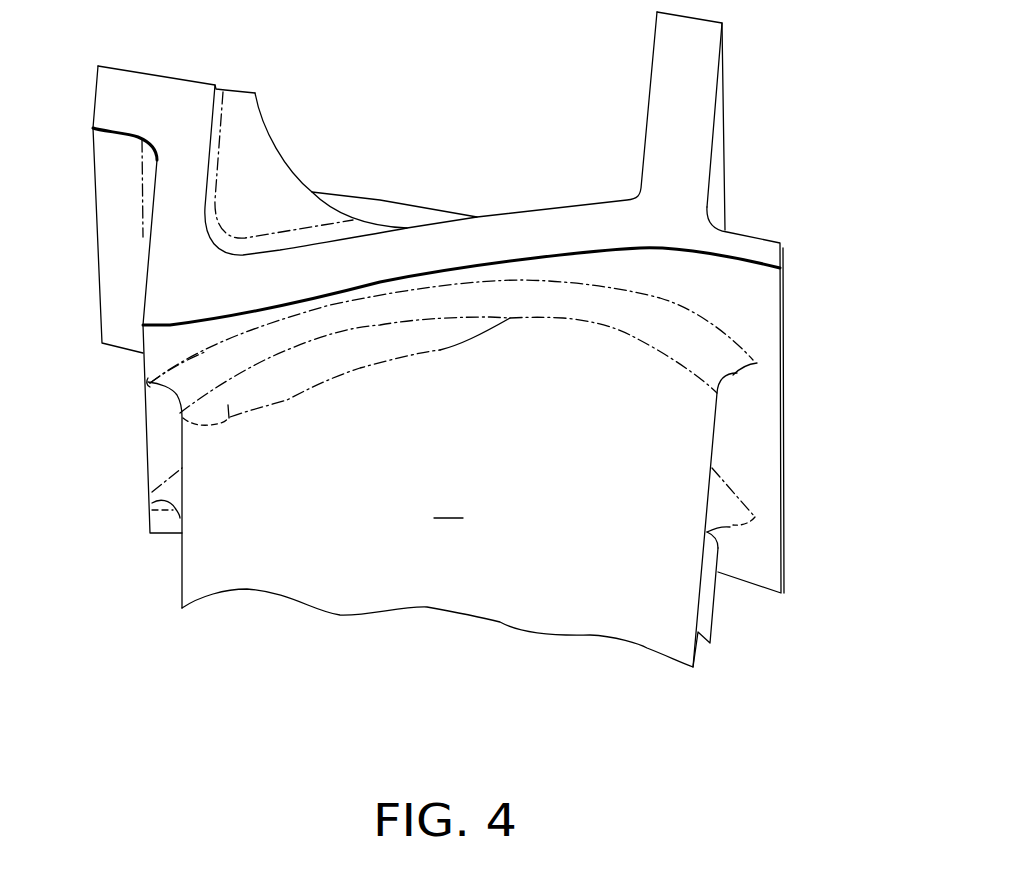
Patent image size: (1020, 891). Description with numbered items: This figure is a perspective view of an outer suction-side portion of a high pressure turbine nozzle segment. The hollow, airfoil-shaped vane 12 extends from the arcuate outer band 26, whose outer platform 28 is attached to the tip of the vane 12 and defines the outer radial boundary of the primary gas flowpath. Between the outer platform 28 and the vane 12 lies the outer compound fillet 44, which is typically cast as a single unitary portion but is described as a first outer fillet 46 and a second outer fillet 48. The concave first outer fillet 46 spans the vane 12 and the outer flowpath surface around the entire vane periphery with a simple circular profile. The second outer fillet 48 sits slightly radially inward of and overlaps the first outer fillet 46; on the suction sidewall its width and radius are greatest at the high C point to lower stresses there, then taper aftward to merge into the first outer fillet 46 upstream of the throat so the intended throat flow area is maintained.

The vane 12 is at (451, 520).
The outer band 26 is at (687, 112).
The outer platform 28 is at (740, 287).
The outer compound fillet 44 is at (398, 391).
The first outer fillet 46 is at (230, 368).
The second outer fillet 48 is at (228, 405).